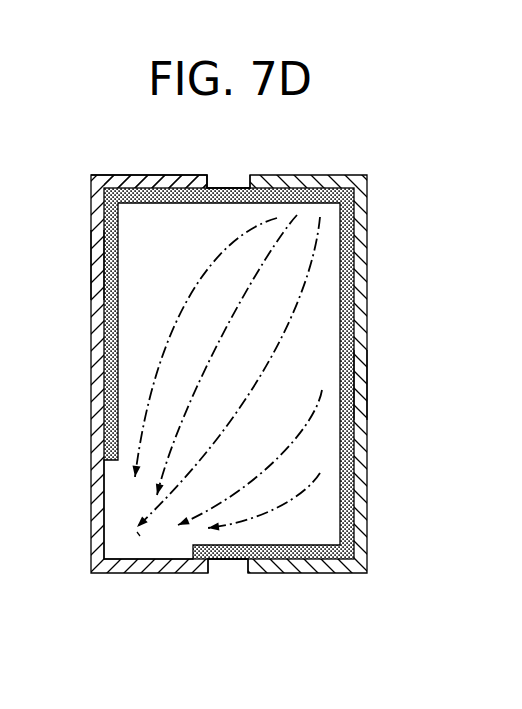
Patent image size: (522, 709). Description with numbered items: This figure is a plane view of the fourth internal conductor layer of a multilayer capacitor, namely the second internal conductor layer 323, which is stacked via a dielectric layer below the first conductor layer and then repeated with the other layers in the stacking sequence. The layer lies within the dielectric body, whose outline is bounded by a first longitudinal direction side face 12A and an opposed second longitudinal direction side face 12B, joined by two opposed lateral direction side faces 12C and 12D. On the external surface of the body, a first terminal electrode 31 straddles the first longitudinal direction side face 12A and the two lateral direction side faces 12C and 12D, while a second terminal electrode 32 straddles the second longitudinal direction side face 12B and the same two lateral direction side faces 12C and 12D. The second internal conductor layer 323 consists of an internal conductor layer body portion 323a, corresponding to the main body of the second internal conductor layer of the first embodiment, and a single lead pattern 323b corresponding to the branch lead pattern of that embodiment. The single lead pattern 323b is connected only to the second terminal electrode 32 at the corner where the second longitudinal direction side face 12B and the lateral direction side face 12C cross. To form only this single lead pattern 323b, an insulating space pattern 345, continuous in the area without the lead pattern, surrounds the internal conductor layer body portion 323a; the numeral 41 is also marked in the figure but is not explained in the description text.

The first terminal electrode 31 is at (360, 226).
The second terminal electrode 32 is at (135, 175).
The lateral direction side face 12D is at (230, 180).
The lateral direction side face 12C is at (225, 562).
The second longitudinal direction side face 12B is at (100, 262).
The first longitudinal direction side face 12A is at (360, 387).
The insulating space pattern 345 is at (352, 494).
The chamber 41 is at (20, 392).
The second internal conductor layer 323 is at (298, 362).
The internal conductor layer body portion 323a is at (320, 442).
The single lead pattern 323b is at (138, 542).